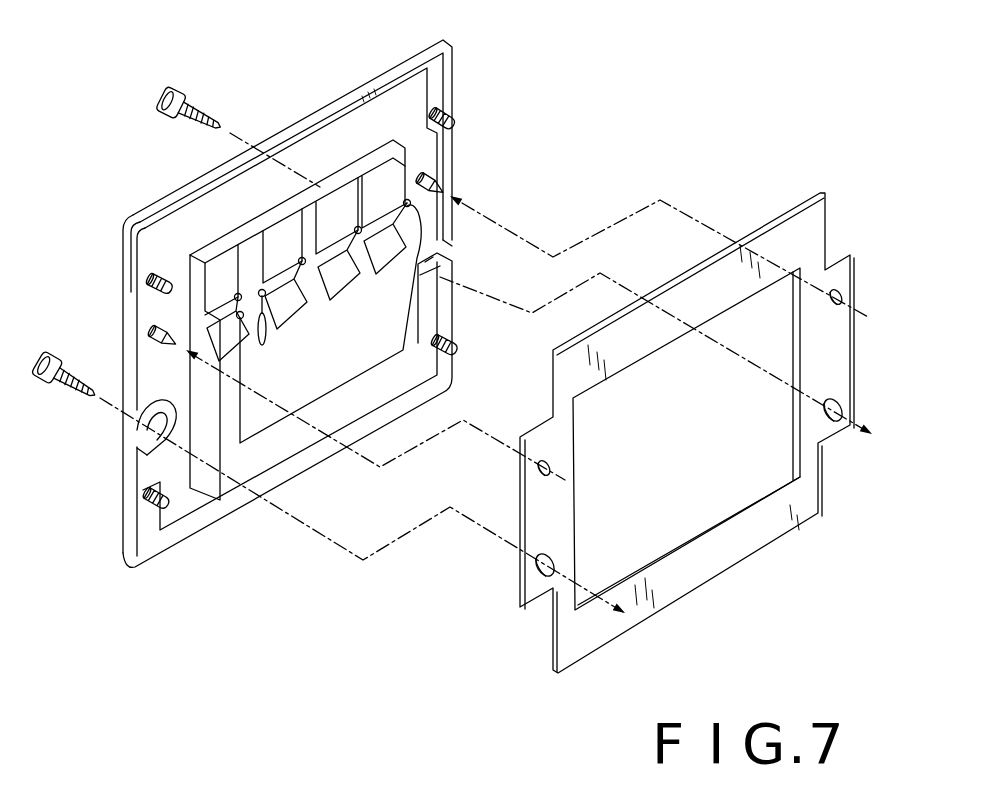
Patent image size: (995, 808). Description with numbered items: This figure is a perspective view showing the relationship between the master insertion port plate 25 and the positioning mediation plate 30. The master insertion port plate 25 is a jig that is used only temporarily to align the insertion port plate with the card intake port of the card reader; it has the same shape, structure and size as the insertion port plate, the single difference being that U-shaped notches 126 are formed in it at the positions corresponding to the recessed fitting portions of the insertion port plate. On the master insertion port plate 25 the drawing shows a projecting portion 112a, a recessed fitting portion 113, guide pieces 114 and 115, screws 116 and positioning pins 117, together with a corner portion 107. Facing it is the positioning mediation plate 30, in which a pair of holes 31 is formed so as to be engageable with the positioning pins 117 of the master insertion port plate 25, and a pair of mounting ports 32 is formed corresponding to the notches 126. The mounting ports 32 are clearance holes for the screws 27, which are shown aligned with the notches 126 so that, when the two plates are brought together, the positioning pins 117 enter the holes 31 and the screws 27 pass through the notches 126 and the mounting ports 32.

The master insertion port plate 25 is at (293, 320).
The screw 27 is at (181, 84).
The positioning mediation plate 30 is at (689, 409).
The hole 31 is at (835, 289).
The mounting port 32 is at (830, 424).
The frame corner portion 107 is at (205, 245).
The projecting portion 112a is at (203, 476).
The recessed fitting portion 113 is at (387, 118).
The guide piece 114 is at (305, 237).
The guide piece 115 is at (312, 293).
The screw 116 is at (150, 292).
The positioning pin 117 is at (150, 345).
The U-shaped notch 126 is at (143, 417).